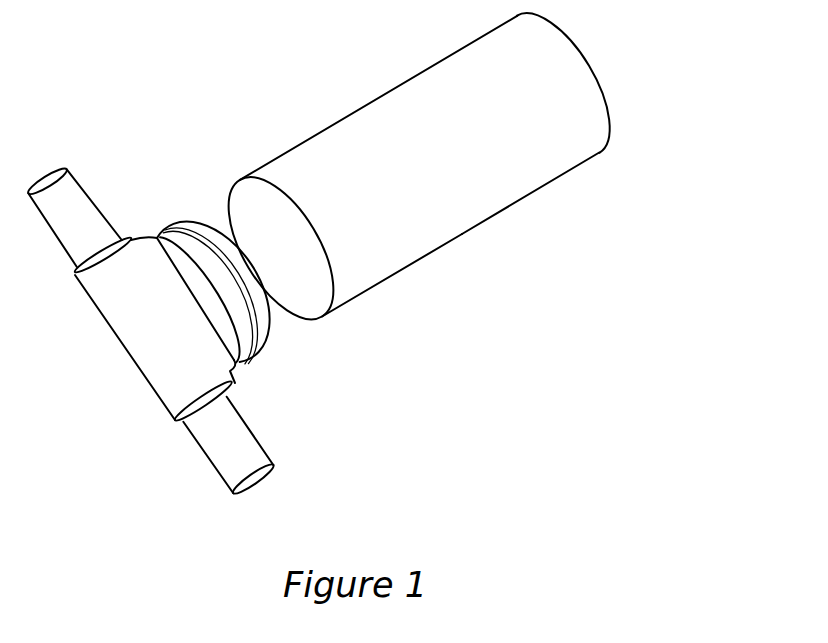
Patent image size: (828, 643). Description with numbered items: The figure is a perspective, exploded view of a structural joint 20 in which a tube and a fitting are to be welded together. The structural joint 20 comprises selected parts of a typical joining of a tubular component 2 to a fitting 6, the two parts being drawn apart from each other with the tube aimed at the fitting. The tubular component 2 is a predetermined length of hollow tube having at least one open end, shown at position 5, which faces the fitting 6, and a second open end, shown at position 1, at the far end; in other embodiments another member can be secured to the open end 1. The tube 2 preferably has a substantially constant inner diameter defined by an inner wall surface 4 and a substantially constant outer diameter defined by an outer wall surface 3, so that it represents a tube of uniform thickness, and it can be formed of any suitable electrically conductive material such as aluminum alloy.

The second open end 1 is at (593, 75).
The tubular component 2 is at (543, 186).
The outer wall surface 3 is at (417, 188).
The inner wall surface 4 is at (312, 272).
The open end 5 is at (298, 322).
The fitting 6 is at (163, 332).
The structural joint 20 is at (225, 150).